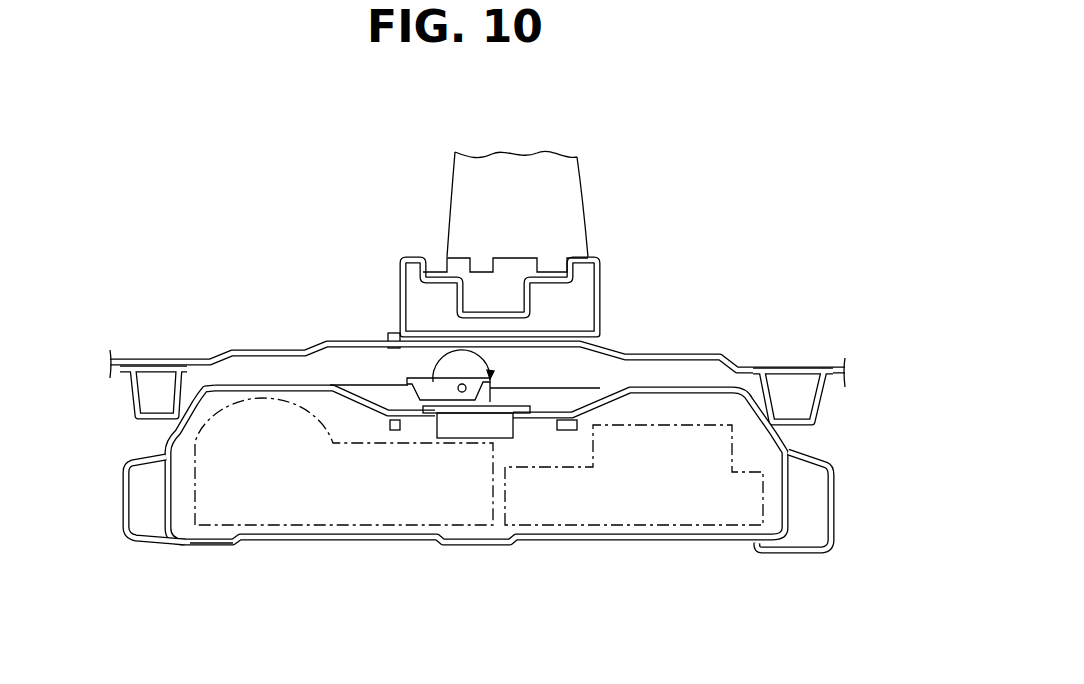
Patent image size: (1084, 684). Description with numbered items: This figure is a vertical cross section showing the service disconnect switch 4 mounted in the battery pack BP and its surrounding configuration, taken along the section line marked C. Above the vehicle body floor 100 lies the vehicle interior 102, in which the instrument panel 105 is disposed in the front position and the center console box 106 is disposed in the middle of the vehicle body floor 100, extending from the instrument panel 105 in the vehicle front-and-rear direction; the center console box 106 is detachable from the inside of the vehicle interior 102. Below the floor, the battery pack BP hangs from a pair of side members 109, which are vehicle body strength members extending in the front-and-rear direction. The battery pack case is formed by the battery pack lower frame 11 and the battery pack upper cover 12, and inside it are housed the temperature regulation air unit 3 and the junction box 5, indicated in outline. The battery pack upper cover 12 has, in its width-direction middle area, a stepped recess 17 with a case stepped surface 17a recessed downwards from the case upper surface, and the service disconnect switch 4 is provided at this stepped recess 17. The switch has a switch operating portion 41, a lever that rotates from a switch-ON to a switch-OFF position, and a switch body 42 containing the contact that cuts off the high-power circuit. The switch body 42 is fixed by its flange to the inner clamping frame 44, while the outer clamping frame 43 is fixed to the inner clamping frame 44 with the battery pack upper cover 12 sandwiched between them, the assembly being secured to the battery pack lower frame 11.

The vehicle interior 102 is at (354, 227).
The instrument panel 105 is at (584, 190).
The center console box 106 is at (599, 278).
The vehicle body floor 100 is at (248, 352).
The side member 109 is at (127, 395).
The battery pack upper cover 12 is at (671, 388).
The battery pack lower frame 11 is at (645, 546).
The battery pack BP is at (226, 547).
The inner clamping frame 44 is at (544, 424).
The switch operating portion 41 is at (424, 391).
The service disconnect switch 4 is at (489, 360).
The switch body 42 is at (481, 396).
The outer clamping frame 43 is at (545, 408).
The stepped recess 17 is at (356, 392).
The case stepped surface 17a is at (379, 408).
The temperature regulation air unit 3 is at (300, 538).
The junction box 5 is at (588, 533).
The section line C is at (458, 150).